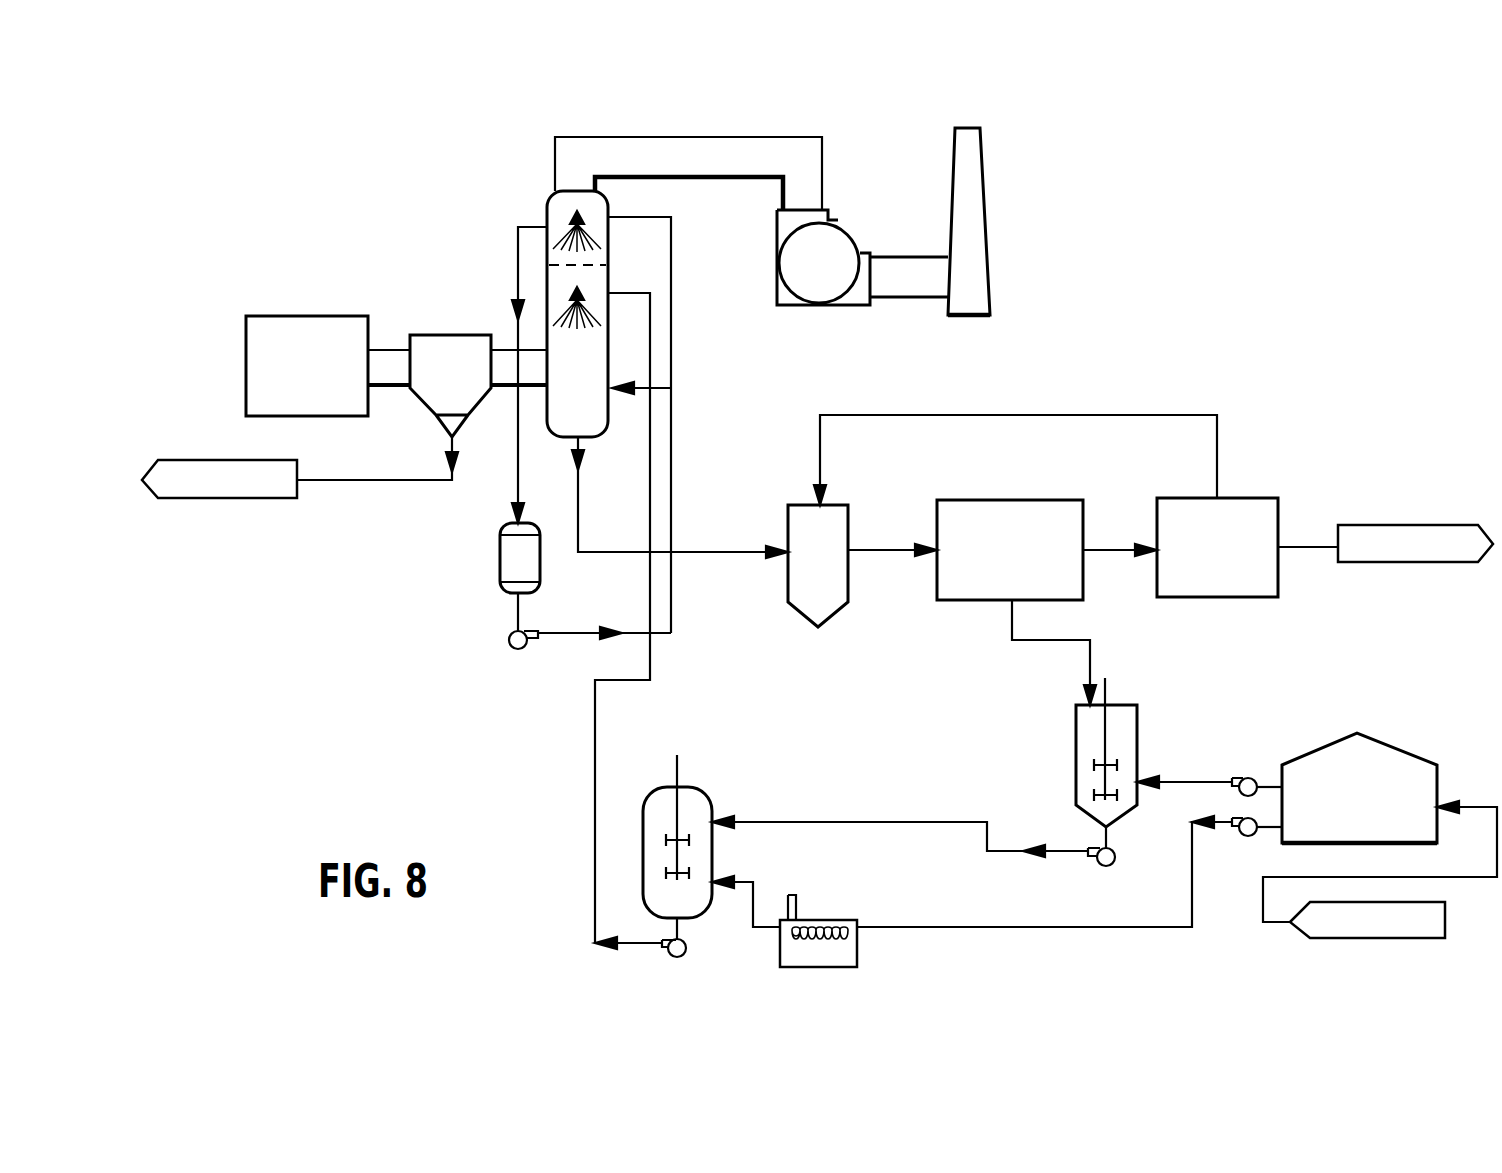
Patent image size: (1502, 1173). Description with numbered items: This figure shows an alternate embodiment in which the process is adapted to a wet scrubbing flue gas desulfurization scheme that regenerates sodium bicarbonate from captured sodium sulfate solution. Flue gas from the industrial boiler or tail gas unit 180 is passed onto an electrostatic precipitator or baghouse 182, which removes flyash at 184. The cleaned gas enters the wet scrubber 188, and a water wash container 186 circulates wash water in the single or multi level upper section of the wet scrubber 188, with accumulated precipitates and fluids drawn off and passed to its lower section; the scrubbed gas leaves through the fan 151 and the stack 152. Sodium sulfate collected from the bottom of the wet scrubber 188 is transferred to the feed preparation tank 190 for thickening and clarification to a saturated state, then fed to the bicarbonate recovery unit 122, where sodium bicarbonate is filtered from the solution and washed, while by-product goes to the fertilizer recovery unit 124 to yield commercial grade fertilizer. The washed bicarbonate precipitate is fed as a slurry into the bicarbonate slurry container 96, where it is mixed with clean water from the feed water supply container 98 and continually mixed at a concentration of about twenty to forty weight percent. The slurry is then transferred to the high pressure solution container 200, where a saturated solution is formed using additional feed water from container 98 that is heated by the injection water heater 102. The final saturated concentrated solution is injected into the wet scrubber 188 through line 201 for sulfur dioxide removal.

The industrial boiler or tail gas unit 180 is at (252, 316).
The electrostatic precipitator or baghouse 182 is at (458, 334).
The flyash removal 184 is at (332, 481).
The water wash container 186 is at (515, 556).
The wet scrubber 188 is at (546, 200).
The feed preparation tank 190 is at (790, 505).
The bicarbonate recovery unit 122 is at (990, 500).
The fertilizer recovery unit 124 is at (1197, 497).
The fan 151 is at (833, 247).
The stack 152 is at (976, 193).
The bicarbonate slurry container 96 is at (1078, 745).
The feed water supply container 98 is at (1300, 758).
The injection water heater 102 is at (830, 918).
The high pressure solution container 200 is at (703, 805).
The injection line 201 is at (595, 788).